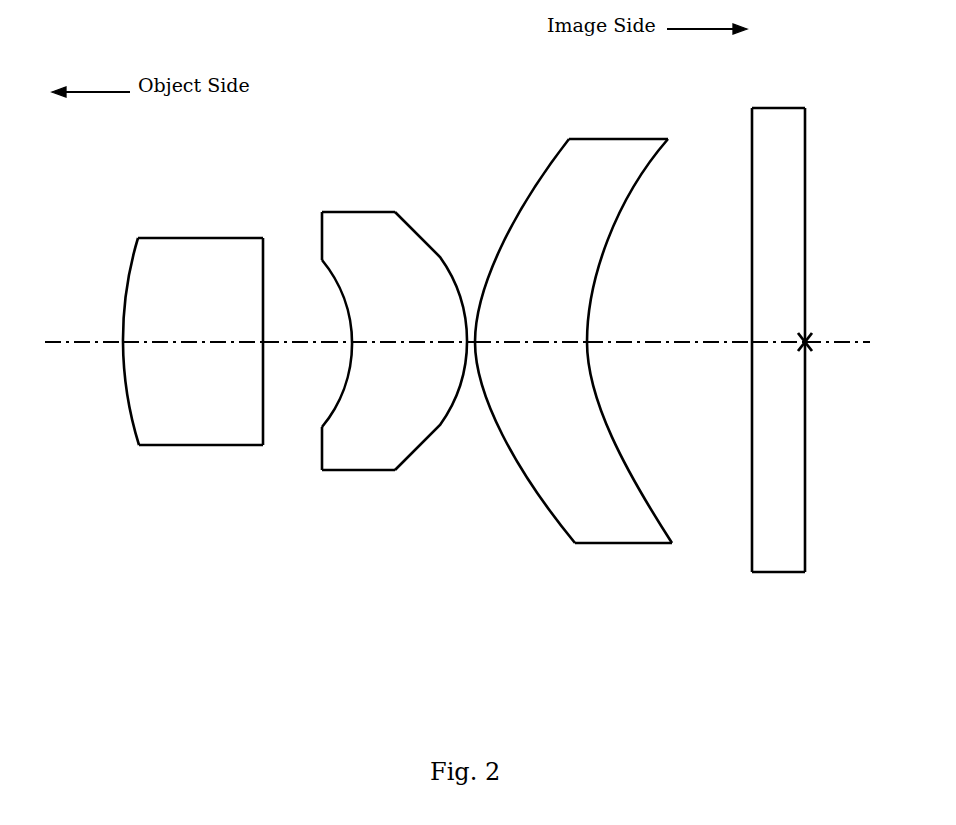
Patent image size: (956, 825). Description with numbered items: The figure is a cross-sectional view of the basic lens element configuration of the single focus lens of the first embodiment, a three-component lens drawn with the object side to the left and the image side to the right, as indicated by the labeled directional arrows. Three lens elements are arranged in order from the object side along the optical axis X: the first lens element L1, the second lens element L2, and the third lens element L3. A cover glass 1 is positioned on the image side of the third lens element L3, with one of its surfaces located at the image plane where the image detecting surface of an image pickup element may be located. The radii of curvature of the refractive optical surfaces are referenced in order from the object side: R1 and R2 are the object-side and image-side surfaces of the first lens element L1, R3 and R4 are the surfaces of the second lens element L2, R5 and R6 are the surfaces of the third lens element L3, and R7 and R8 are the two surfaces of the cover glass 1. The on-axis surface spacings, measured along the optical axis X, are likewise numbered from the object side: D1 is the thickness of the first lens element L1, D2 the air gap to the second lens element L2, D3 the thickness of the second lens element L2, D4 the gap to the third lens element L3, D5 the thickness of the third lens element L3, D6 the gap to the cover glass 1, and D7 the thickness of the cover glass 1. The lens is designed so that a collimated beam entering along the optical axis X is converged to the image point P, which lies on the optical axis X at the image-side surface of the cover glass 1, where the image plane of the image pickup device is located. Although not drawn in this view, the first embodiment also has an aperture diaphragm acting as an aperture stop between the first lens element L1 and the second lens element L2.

The cover glass 1 is at (770, 311).
The first lens element L1 is at (186, 307).
The second lens element L2 is at (378, 308).
The third lens element L3 is at (581, 309).
The radius of curvature of first surface R1 is at (127, 276).
The radius of curvature of second surface R2 is at (282, 325).
The radius of curvature of third surface R3 is at (350, 323).
The radius of curvature of fourth surface R4 is at (450, 262).
The radius of curvature of fifth surface R5 is at (526, 200).
The radius of curvature of sixth surface R6 is at (615, 243).
The radius of curvature of seventh surface R7 is at (748, 167).
The radius of curvature of eighth surface R8 is at (806, 167).
The first on-axis surface spacing D1 is at (182, 345).
The second on-axis surface spacing D2 is at (296, 345).
The third on-axis surface spacing D3 is at (395, 345).
The fourth on-axis surface spacing D4 is at (470, 345).
The fifth on-axis surface spacing D5 is at (527, 345).
The sixth on-axis surface spacing D6 is at (667, 345).
The seventh on-axis surface spacing D7 is at (778, 345).
The optical axis X is at (78, 346).
The image point P is at (816, 352).